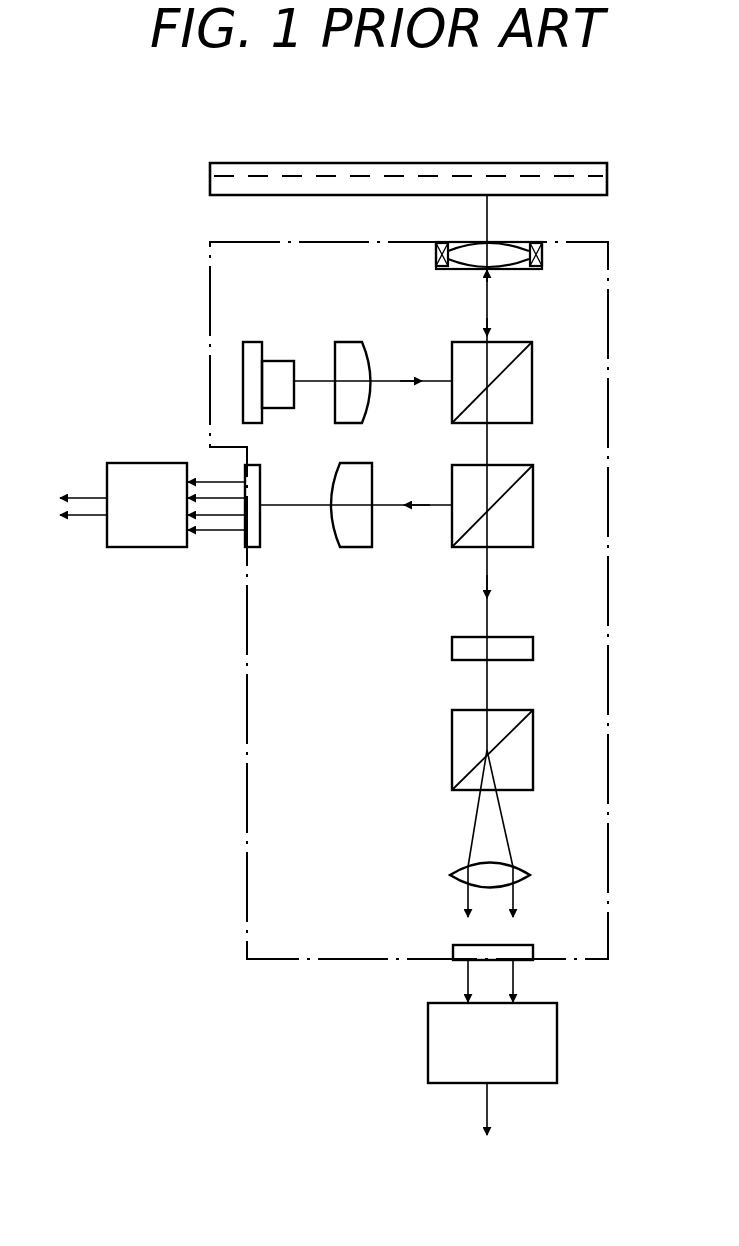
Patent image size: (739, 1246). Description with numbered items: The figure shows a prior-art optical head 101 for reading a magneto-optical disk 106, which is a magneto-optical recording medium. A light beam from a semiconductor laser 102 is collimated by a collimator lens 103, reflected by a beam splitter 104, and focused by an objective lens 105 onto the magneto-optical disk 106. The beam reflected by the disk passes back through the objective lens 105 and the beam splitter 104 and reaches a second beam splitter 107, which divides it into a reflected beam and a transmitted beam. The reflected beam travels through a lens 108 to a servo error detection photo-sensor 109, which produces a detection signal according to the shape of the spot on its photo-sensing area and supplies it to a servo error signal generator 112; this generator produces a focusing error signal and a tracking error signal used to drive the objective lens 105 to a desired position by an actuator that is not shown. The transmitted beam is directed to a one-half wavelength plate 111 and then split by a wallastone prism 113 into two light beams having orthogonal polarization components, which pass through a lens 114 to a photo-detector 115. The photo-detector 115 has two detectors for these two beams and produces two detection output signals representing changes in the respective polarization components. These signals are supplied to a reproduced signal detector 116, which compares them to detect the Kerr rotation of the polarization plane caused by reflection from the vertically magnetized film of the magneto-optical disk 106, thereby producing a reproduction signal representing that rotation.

The optical head 101 is at (247, 820).
The semiconductor laser 102 is at (277, 360).
The collimator lens 103 is at (345, 342).
The beam splitter 104 is at (532, 365).
The objective lens 105 is at (515, 270).
The magneto-optical disk 106 is at (567, 162).
The beam splitter 107 is at (523, 547).
The lens 108 is at (357, 547).
The servo error detection photo-sensor 109 is at (250, 549).
The one-half wavelength plate 111 is at (535, 648).
The servo error signal generator 112 is at (163, 547).
The wallastone prism 113 is at (533, 730).
The lens 114 is at (520, 867).
The photo-detector 115 is at (533, 950).
The reproduced signal detector 116 is at (558, 1018).